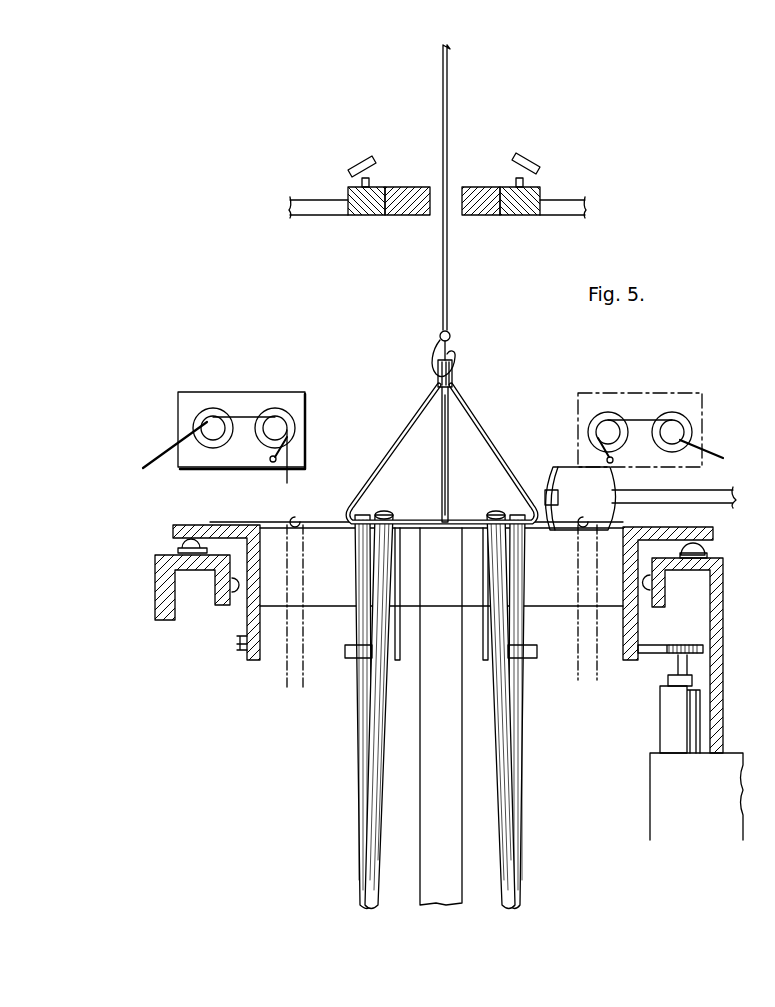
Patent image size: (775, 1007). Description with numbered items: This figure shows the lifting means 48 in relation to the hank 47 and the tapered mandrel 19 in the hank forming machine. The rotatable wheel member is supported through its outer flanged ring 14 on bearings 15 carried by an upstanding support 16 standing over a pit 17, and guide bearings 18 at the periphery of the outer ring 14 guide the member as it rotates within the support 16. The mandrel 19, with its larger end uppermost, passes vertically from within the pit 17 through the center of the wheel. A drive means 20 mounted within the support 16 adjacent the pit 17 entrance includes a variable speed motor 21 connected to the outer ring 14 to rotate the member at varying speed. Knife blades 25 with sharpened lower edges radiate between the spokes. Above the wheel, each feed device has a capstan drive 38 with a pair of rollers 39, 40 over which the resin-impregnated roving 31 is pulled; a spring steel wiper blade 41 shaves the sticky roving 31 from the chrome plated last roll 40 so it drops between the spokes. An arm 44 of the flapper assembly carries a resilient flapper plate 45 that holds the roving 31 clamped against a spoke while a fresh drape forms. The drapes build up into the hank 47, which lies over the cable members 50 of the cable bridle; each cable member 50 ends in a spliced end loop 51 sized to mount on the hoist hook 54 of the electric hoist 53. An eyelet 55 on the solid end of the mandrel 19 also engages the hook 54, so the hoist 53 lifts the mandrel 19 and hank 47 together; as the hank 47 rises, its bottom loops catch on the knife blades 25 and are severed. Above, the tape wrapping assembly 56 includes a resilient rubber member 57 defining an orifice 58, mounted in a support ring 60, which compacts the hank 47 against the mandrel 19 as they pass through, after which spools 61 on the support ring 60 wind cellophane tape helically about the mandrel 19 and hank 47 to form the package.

The outer flanged ring 14 is at (191, 522).
The bearings 15 is at (175, 540).
The upstanding support 16 is at (155, 585).
The pit 17 is at (655, 786).
The guide bearings 18 is at (660, 593).
The tapered mandrel 19 is at (430, 790).
The drive means 20 is at (648, 714).
The variable speed motor 21 is at (668, 740).
The knife blades 25 is at (345, 652).
The roving 31 is at (162, 447).
The capstan drive 38 is at (245, 392).
The roller 39 is at (211, 420).
The capstan roll 40 is at (275, 420).
The wiper blade 41 is at (277, 460).
The arm 44 is at (640, 495).
The flapper plate 45 is at (556, 470).
The hank 47 is at (407, 504).
The lifting means 48 is at (428, 441).
The cable members 50 is at (418, 412).
The spliced end loop 51 is at (453, 378).
The electric hoist 53 is at (452, 95).
The hoist hook 54 is at (430, 348).
The eyelet 55 is at (442, 464).
The tape wrapping assembly 56 is at (418, 184).
The deformable member 57 is at (410, 215).
The orifice 58 is at (462, 187).
The support ring 60 is at (357, 215).
The spools 61 is at (362, 155).